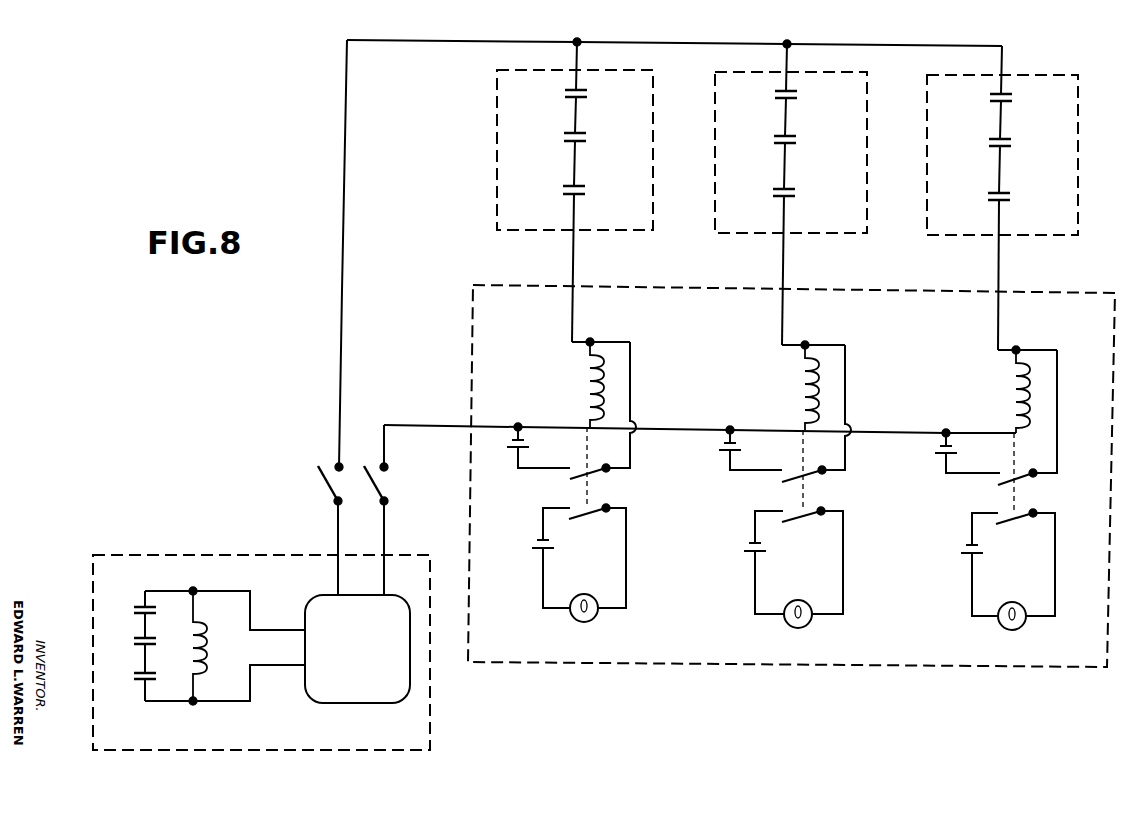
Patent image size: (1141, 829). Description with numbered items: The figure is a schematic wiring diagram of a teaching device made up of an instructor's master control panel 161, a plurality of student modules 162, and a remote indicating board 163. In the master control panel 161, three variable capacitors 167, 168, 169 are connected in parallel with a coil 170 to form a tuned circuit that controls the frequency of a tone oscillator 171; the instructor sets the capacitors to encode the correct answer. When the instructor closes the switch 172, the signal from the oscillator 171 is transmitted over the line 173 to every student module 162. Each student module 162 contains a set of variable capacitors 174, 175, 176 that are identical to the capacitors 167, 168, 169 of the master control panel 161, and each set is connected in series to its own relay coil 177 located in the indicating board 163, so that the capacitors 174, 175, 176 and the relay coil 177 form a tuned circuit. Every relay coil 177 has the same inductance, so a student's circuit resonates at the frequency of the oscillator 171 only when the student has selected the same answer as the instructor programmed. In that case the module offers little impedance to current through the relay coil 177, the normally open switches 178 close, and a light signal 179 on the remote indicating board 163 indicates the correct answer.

The master control panel 161 is at (245, 549).
The student module 162 is at (755, 196).
The remote indicating board 163 is at (463, 350).
The variable capacitor 167 is at (141, 684).
The variable capacitor 168 is at (141, 645).
The variable capacitor 169 is at (141, 608).
The coil 170 is at (202, 648).
The oscillator 171 is at (313, 603).
The switch 172 is at (318, 467).
The line 173 is at (344, 185).
The variable capacitor 174 is at (582, 96).
The variable capacitor 175 is at (566, 137).
The variable capacitor 176 is at (580, 186).
The relay coil 177 is at (582, 394).
The normally open switch 178 is at (590, 490).
The light signal 179 is at (585, 594).